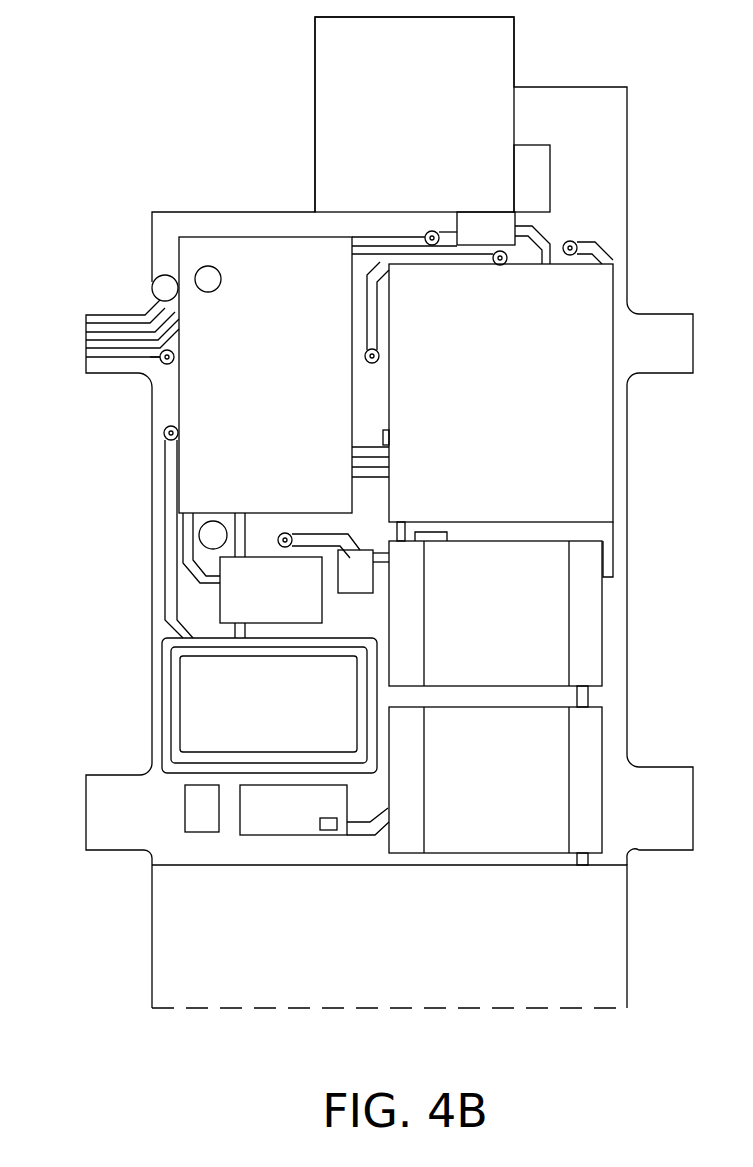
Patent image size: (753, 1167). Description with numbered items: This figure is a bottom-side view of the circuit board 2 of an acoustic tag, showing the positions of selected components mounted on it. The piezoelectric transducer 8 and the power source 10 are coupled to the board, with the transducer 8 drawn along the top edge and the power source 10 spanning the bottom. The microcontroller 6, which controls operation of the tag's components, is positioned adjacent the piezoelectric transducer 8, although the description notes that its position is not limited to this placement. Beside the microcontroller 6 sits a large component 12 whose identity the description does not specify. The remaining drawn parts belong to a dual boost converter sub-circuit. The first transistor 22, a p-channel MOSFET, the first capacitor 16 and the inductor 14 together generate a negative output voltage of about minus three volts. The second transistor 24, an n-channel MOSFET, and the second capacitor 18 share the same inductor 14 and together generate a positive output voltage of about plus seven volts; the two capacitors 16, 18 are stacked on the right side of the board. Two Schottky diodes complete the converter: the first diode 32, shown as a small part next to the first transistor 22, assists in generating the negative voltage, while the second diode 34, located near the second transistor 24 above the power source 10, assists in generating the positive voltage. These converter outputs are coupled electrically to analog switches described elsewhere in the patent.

The circuit board 2 is at (240, 212).
The microcontroller 6 is at (259, 420).
The piezoelectric transducer 8 is at (407, 117).
The power source 10 is at (364, 957).
The memory module 12 is at (484, 417).
The inductor 14 is at (248, 709).
The first capacitor 16 is at (484, 617).
The second capacitor 18 is at (484, 789).
The first transistor 22 is at (256, 602).
The second transistor 24 is at (255, 837).
The first diode 32 is at (338, 572).
The second diode 34 is at (183, 818).